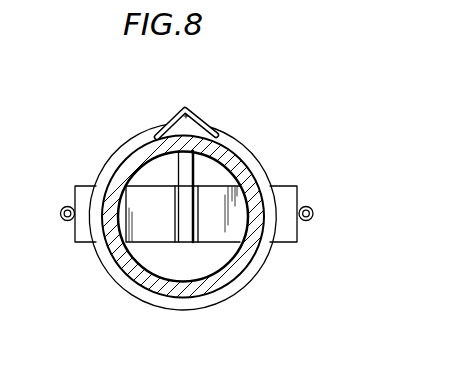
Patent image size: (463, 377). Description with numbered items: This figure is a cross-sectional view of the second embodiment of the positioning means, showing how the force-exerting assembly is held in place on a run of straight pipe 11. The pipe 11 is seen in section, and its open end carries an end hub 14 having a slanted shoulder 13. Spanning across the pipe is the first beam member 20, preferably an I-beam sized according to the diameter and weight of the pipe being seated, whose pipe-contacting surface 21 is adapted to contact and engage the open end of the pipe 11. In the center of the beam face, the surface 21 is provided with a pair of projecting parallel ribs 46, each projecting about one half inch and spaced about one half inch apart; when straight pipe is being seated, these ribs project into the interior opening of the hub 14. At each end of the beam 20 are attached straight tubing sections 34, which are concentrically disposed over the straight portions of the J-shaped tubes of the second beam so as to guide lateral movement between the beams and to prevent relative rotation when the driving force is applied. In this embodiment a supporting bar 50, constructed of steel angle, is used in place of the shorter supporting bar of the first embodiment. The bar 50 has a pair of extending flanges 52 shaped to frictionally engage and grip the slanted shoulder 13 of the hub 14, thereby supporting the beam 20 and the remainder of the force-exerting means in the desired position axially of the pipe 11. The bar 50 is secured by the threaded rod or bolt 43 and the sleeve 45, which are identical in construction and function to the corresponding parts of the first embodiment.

The pipe 11 is at (230, 277).
The slanted shoulder 13 is at (249, 151).
The end hub 14 is at (276, 182).
The first beam member 20 is at (83, 185).
The pipe-contacting surface 21 is at (116, 283).
The straight tubing sections 34 is at (59, 219).
The threaded rod or bolt 43 is at (199, 114).
The sleeve 45 is at (177, 168).
The projecting parallel ribs 46 is at (178, 214).
The supporting bar 50 is at (185, 105).
The extending flanges 52 is at (165, 124).